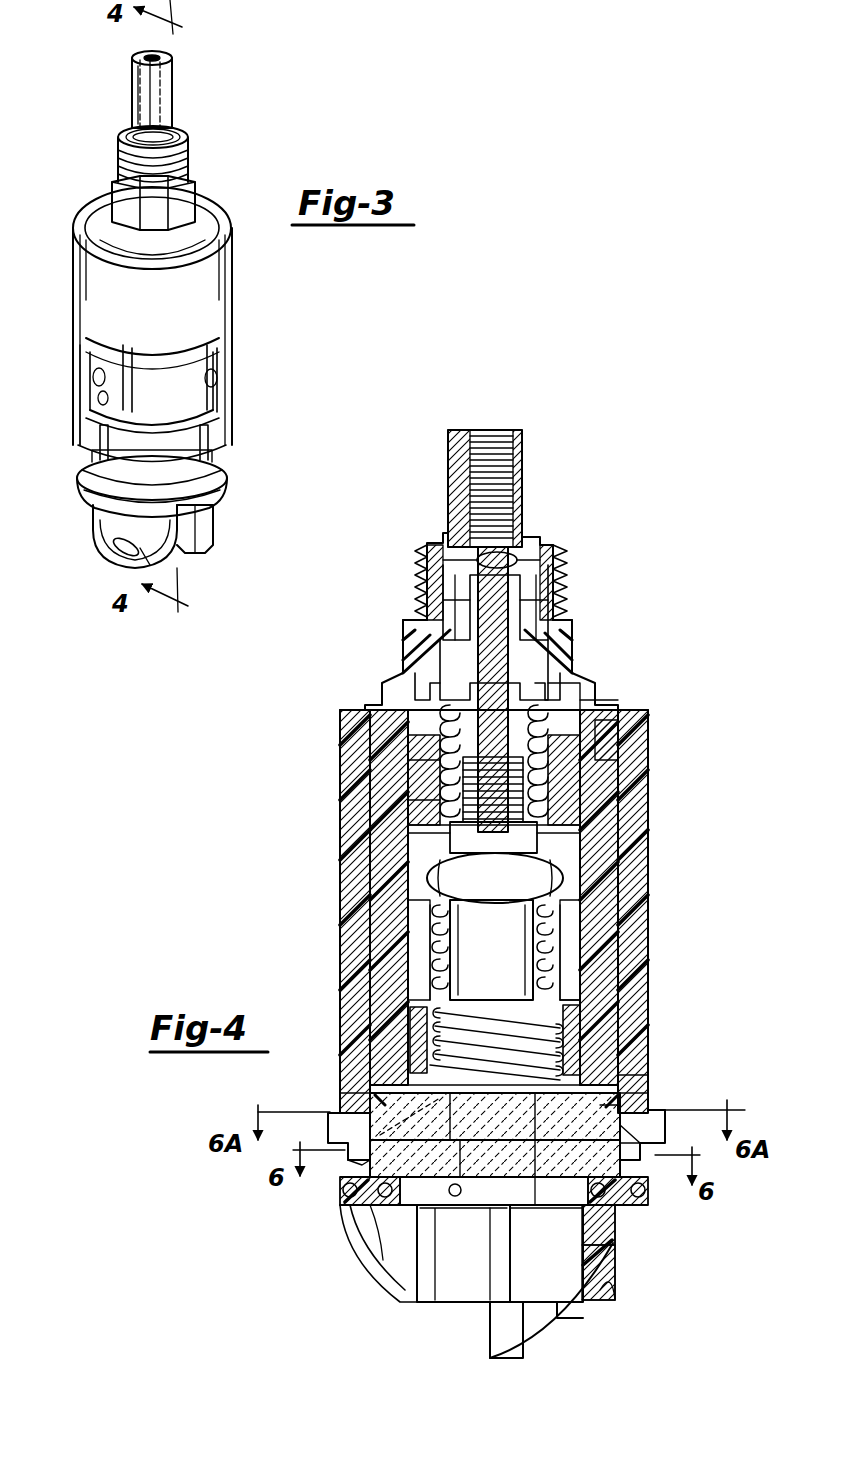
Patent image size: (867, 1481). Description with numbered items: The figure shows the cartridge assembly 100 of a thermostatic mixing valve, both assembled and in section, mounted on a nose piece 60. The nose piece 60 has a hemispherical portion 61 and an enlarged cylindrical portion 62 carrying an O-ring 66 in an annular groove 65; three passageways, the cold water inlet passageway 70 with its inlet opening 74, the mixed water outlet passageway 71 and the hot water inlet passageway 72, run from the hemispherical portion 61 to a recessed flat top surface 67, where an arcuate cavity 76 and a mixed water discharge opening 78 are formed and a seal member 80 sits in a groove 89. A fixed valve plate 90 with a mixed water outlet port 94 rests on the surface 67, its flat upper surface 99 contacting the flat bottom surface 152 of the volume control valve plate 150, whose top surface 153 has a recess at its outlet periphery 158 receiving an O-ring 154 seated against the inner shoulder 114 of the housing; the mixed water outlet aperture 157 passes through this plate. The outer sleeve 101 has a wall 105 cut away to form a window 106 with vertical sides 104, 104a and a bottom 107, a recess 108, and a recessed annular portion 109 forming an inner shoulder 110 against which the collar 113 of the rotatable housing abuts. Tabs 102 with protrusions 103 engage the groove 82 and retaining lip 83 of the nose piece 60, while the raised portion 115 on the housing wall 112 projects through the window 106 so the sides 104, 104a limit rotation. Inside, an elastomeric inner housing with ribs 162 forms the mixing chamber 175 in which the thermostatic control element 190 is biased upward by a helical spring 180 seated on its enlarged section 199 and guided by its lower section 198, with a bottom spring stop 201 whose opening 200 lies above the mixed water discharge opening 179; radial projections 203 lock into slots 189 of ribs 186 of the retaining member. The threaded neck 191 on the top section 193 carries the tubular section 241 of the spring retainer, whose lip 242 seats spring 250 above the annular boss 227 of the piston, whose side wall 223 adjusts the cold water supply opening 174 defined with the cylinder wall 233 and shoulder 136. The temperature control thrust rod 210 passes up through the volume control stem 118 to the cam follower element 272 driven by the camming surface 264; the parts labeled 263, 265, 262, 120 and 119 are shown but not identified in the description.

In FIG. 3, the cartridge assembly 100 is at (42, 293).
In FIG. 3, the stem 263 is at (150, 57).
In FIG. 4, the stem 263 is at (490, 432).
In FIG. 3, the stem flat 265 is at (166, 82).
In FIG. 3, the stem shaft 262 is at (140, 92).
In FIG. 3, the threaded collar 120 is at (186, 140).
In FIG. 4, the threaded collar 120 is at (567, 576).
In FIG. 3, the volume control stem 118 is at (193, 172).
In FIG. 4, the volume control stem 118 is at (562, 618).
In FIG. 3, the nut body 119 is at (192, 197).
In FIG. 4, the nut body 119 is at (558, 648).
In FIG. 3, the wall of housing 112 is at (133, 360).
In FIG. 4, the wall of housing 112 is at (620, 868).
In FIG. 3, the window 106 is at (213, 340).
In FIG. 3, the recess 108 is at (146, 410).
In FIG. 3, the raised portion 115 is at (95, 355).
In FIG. 3, the vertical side of window 104 is at (92, 380).
In FIG. 3, the vertical side of window 104a is at (217, 380).
In FIG. 3, the bottom of window 107 is at (92, 404).
In FIG. 3, the tabs 102 is at (226, 478).
In FIG. 4, the tabs 102 is at (336, 1145).
In FIG. 3, the nose piece 60 is at (92, 515).
In FIG. 4, the nose piece 60 is at (608, 1294).
In FIG. 3, the hemispherical portion 61 is at (100, 540).
In FIG. 4, the hemispherical portion 61 is at (598, 1300).
In FIG. 3, the mixed water outlet passageway 71 is at (186, 553).
In FIG. 4, the mixed water outlet passageway 71 is at (478, 1293).
In FIG. 3, the hot water inlet passageway 72 is at (115, 557).
In FIG. 4, the camming surface 264 is at (516, 560).
In FIG. 4, the cam follower element 272 is at (545, 558).
In FIG. 4, the temperature control thrust rod 210 is at (420, 682).
In FIG. 4, the annular lip 242 is at (578, 682).
In FIG. 4, the side wall of piston 223 is at (590, 704).
In FIG. 4, the cold water supply opening 174 is at (600, 732).
In FIG. 4, the shoulder 136 is at (420, 742).
In FIG. 4, the wall of cylinder 233 is at (600, 752).
In FIG. 4, the spring 250 is at (430, 762).
In FIG. 4, the tubular section 241 is at (575, 760).
In FIG. 4, the wall of cylindrical sleeve 105 is at (345, 797).
In FIG. 4, the threaded neck 191 is at (590, 786).
In FIG. 4, the annular boss 227 is at (582, 808).
In FIG. 4, the section of increased diameter 199 is at (505, 845).
In FIG. 4, the top section 193 is at (582, 836).
In FIG. 4, the mixing chamber 175 is at (530, 896).
In FIG. 4, the cylindrical sleeve 101 is at (635, 888).
In FIG. 4, the ribs 186 is at (395, 920).
In FIG. 4, the ribs 162 is at (605, 910).
In FIG. 4, the helical spring 180 is at (442, 914).
In FIG. 4, the slots 189 is at (427, 976).
In FIG. 4, the thermostatic control element 190 is at (382, 980).
In FIG. 4, the mixed water discharge opening 179 is at (436, 1008).
In FIG. 4, the lower section 198 is at (612, 958).
In FIG. 4, the mixed water outlet aperture 157 is at (420, 1060).
In FIG. 4, the radial projections 203 is at (412, 1060).
In FIG. 4, the bottom spring stop 201 is at (578, 1040).
In FIG. 4, the inner shoulder 110 is at (382, 1056).
In FIG. 4, the collar 113 is at (640, 1076).
In FIG. 4, the top surface 153 is at (340, 1102).
In FIG. 4, the O-ring 154 is at (370, 1110).
In FIG. 4, the inner shoulder 114 is at (627, 1096).
In FIG. 4, the annular recessed portion 109 is at (665, 1097).
In FIG. 4, the outlet periphery 158 is at (410, 1116).
In FIG. 4, the circular opening 200 is at (536, 1126).
In FIG. 4, the flat bottom surface 152 is at (660, 1148).
In FIG. 4, the groove 82 is at (356, 1167).
In FIG. 4, the fixed valve plate 90 is at (442, 1186).
In FIG. 4, the flat upper surface 99 is at (482, 1206).
In FIG. 4, the protrusion 103 is at (342, 1186).
In FIG. 4, the annular groove 65 is at (345, 1204).
In FIG. 4, the retaining lip 83 is at (412, 1210).
In FIG. 4, the volume control valve plate 150 is at (526, 1190).
In FIG. 4, the cylindrical portion 62 is at (650, 1192).
In FIG. 4, the O-ring 66 is at (372, 1222).
In FIG. 4, the recessed flat top surface 67 is at (412, 1246).
In FIG. 4, the mixed water outlet port 94 is at (491, 1215).
In FIG. 4, the mixed water discharge opening 78 is at (521, 1215).
In FIG. 4, the seal member 80 is at (610, 1216).
In FIG. 4, the arcuate cavity 76 is at (606, 1250).
In FIG. 4, the groove 89 is at (383, 1262).
In FIG. 4, the cold water inlet passageway 70 is at (560, 1335).
In FIG. 4, the inlet opening 74 is at (535, 1335).